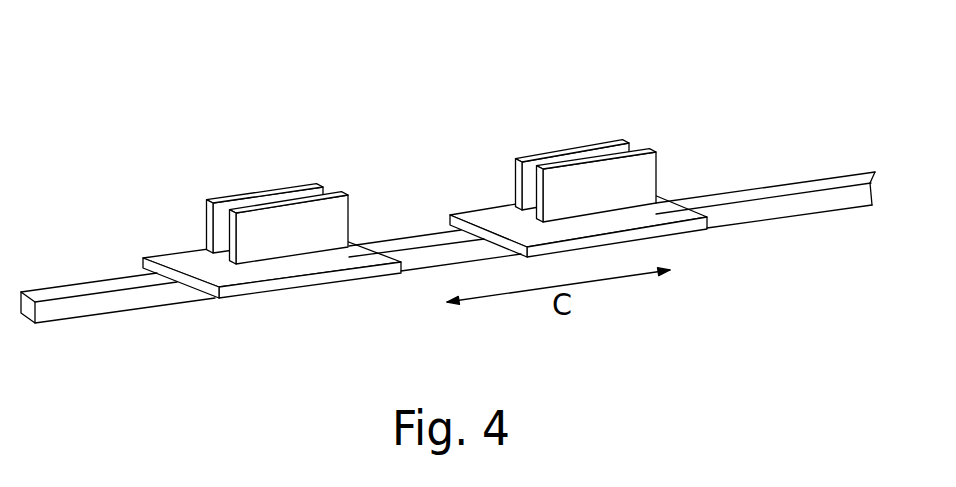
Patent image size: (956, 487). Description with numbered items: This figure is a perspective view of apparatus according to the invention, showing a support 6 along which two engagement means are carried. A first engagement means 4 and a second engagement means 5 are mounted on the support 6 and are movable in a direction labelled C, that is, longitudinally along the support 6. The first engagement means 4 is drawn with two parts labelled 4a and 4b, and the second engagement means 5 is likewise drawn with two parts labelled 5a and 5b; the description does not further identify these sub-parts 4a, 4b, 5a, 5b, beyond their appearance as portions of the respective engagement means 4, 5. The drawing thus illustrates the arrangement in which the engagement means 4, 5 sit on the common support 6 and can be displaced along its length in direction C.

The first engagement means 4 is at (289, 196).
The front holding block of first holding unit 4a is at (337, 223).
The rear holding block of first holding unit 4b is at (290, 187).
The second engagement means 5 is at (593, 154).
The front holding block of second holding unit 5a is at (642, 182).
The rear holding block of second holding unit 5b is at (612, 142).
The support 6 is at (816, 203).